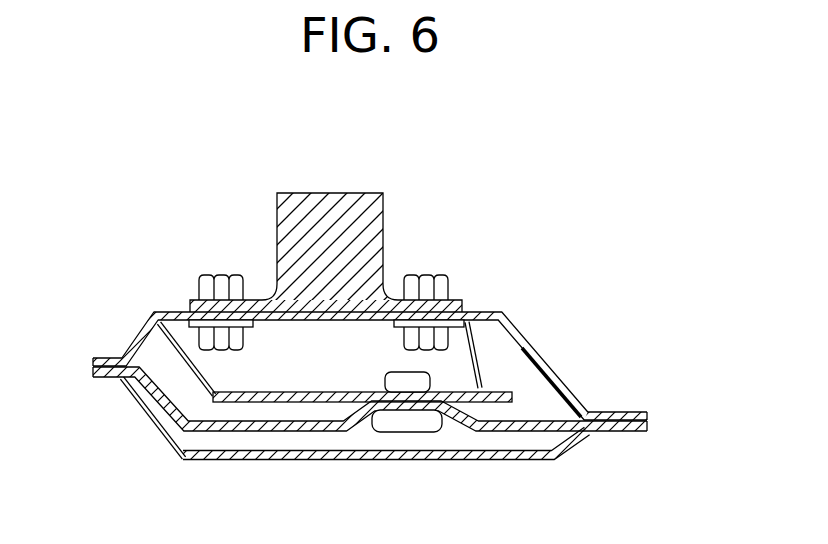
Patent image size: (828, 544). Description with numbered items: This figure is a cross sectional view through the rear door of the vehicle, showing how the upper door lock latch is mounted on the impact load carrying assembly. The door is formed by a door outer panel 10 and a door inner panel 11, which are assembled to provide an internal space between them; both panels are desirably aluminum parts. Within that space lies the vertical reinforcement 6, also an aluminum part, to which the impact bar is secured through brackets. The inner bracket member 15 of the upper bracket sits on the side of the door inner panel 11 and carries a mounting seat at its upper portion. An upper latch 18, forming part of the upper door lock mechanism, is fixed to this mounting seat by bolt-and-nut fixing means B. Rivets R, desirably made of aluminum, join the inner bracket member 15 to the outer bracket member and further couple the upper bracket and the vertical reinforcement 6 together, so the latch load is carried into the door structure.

The upper latch 18 is at (353, 193).
The bolt-and-nut fixing means B is at (199, 281).
The door inner panel 11 is at (523, 324).
The inner bracket member 15 is at (458, 390).
The vertical reinforcement 6 is at (305, 431).
The door outer panel 10 is at (237, 461).
The rivets R is at (403, 433).